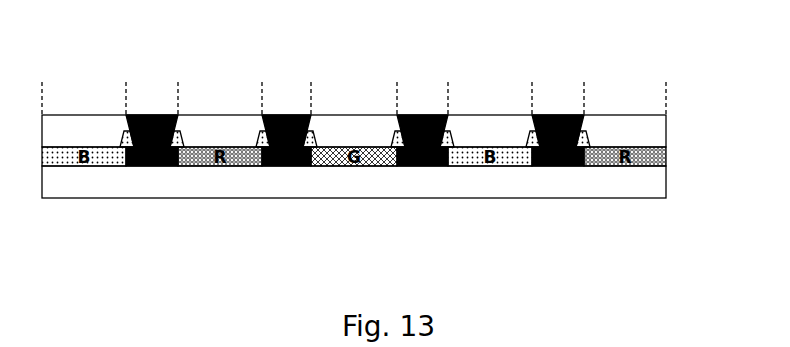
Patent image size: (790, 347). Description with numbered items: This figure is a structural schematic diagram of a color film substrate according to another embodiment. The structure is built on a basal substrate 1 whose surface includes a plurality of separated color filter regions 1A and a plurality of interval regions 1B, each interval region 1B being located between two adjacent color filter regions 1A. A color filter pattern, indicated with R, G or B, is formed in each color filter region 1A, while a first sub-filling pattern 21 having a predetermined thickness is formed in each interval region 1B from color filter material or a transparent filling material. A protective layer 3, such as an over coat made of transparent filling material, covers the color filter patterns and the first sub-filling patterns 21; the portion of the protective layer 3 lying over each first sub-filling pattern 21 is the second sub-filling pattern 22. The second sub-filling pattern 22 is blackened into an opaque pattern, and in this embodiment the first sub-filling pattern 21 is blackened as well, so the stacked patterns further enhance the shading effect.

The basal substrate 1 is at (633, 179).
The protective layer 3 is at (633, 130).
The first sub-filling pattern 21 is at (162, 166).
The second sub-filling pattern 22 is at (167, 116).
The color filter region 1A is at (42, 98).
The interval region 1B is at (126, 98).